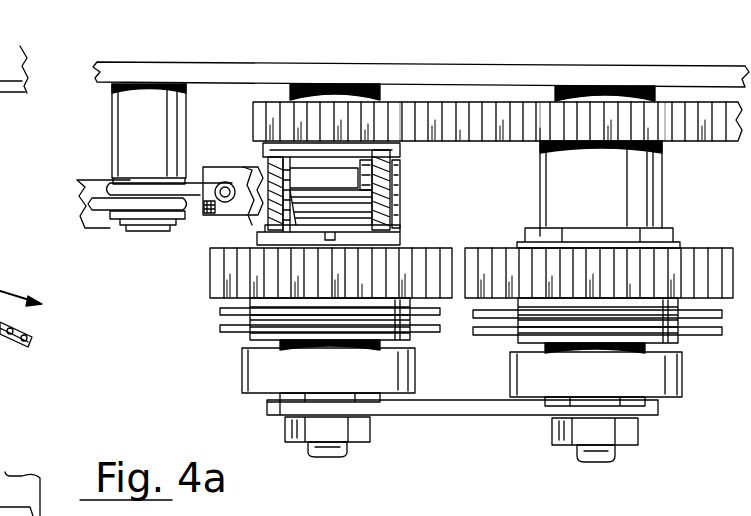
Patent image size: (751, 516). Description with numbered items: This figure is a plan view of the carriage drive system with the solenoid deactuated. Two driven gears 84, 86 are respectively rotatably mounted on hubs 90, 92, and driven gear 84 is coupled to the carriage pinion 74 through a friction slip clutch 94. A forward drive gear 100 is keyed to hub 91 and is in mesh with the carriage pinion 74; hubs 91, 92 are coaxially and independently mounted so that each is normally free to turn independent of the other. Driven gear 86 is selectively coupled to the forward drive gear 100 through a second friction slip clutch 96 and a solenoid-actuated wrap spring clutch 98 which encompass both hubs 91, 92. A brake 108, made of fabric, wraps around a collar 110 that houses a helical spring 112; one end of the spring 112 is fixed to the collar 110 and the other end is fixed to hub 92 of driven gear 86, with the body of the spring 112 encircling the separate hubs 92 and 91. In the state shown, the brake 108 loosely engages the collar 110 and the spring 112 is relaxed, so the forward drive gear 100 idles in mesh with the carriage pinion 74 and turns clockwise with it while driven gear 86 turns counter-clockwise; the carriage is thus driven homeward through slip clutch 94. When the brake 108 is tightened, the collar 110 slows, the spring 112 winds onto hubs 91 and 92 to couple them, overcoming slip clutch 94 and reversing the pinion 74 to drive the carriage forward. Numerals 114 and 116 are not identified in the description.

The carriage pinion 74 is at (673, 130).
The driven gear 84 is at (686, 267).
The driven gear 86 is at (212, 273).
The hub 90 is at (607, 162).
The hub 91 is at (312, 92).
The hub 92 is at (413, 232).
The friction slip clutch 94 is at (699, 370).
The second friction slip clutch 96 is at (223, 351).
The wrap spring clutch 98 is at (215, 217).
The forward drive gear 100 is at (264, 101).
The brake 108 is at (236, 166).
The collar 110 is at (421, 137).
The helical spring 112 is at (404, 151).
The inner hub member 114 is at (340, 167).
The threaded sleeve 116 is at (404, 188).